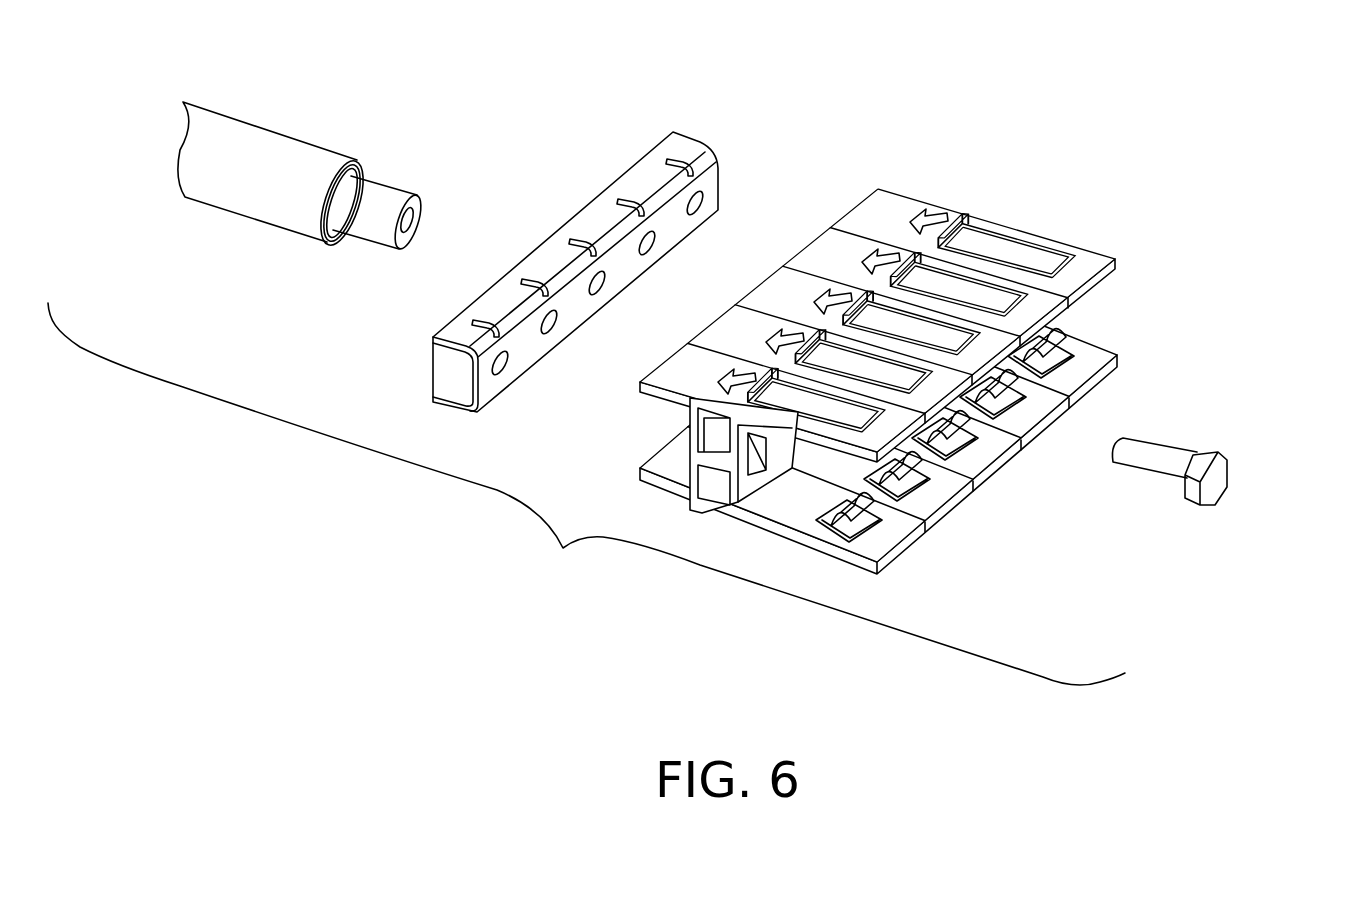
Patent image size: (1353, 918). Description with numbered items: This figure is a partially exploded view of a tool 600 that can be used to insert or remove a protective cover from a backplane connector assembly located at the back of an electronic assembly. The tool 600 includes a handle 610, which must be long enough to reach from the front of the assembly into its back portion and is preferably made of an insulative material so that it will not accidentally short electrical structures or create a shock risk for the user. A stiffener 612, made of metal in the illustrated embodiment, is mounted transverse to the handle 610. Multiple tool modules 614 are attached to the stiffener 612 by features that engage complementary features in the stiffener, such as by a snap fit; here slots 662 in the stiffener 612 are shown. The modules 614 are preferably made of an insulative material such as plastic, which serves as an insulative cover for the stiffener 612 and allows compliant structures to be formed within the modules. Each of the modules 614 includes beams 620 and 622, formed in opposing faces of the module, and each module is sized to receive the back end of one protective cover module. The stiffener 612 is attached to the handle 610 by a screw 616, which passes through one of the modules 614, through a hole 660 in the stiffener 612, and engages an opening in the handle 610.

The tool 600 is at (586, 494).
The handle 610 is at (275, 128).
The stiffener 612 is at (575, 246).
The tool modules 614 is at (1112, 348).
The screw 616 is at (1215, 453).
The beam 620 is at (843, 513).
The beam 622 is at (990, 243).
The hole 660 is at (505, 368).
The slots 662 is at (667, 160).